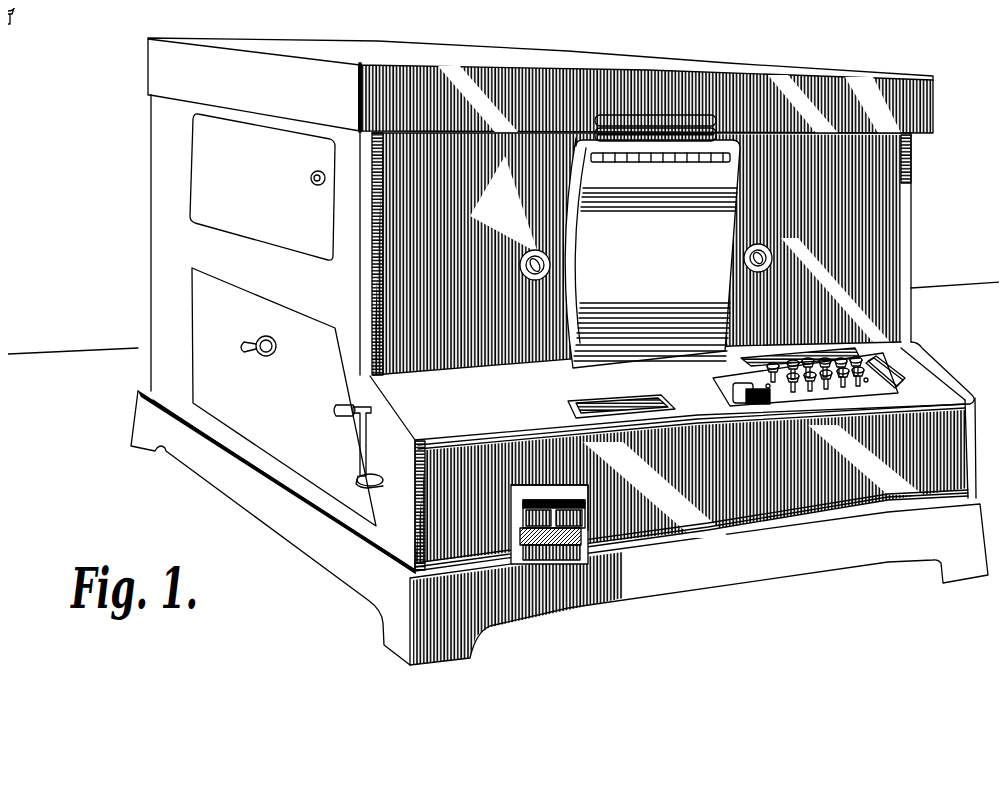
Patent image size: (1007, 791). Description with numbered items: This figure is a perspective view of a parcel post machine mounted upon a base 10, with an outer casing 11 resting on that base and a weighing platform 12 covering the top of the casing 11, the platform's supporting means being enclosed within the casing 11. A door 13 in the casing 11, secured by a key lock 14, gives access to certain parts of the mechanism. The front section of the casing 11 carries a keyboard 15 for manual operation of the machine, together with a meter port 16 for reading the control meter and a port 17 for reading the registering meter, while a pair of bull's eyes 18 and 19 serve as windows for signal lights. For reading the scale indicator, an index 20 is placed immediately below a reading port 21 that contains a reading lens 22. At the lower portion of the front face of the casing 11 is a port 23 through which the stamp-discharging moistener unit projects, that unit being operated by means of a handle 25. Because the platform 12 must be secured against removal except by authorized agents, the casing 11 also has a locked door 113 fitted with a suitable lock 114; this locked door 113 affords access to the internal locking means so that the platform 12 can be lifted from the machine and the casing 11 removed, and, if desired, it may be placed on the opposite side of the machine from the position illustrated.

The base 10 is at (140, 447).
The outer casing 11 is at (152, 347).
The weighing platform 12 is at (152, 75).
The door 13 is at (247, 273).
The locked door 113 is at (198, 205).
The lock 114 is at (300, 172).
The key lock 14 is at (252, 355).
The keyboard 15 is at (897, 376).
The meter port 16 is at (837, 343).
The port 17 is at (565, 400).
The bull's eye 18 is at (527, 273).
The bull's eye 19 is at (748, 265).
The index 20 is at (683, 155).
The reading port 21 is at (720, 100).
The reading lens 22 is at (678, 99).
The port 23 is at (512, 533).
The handle 25 is at (353, 446).